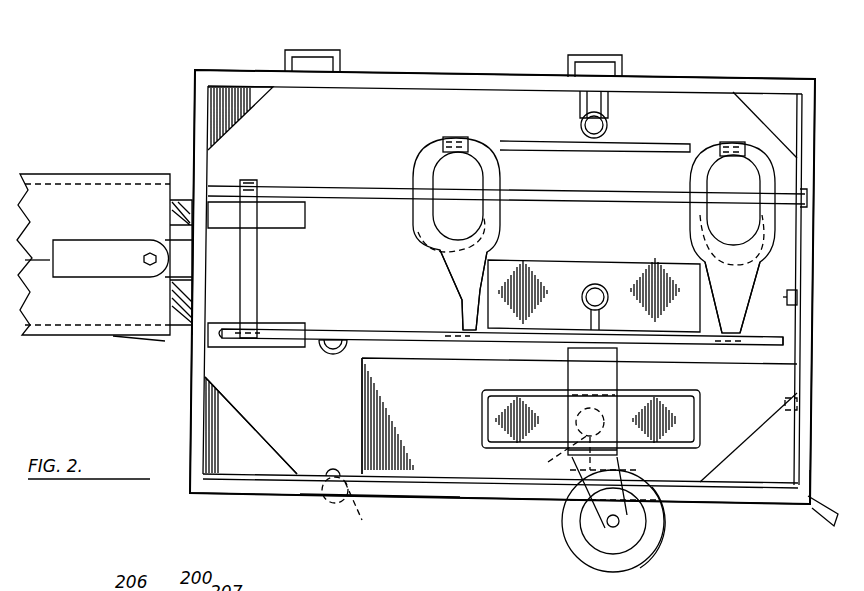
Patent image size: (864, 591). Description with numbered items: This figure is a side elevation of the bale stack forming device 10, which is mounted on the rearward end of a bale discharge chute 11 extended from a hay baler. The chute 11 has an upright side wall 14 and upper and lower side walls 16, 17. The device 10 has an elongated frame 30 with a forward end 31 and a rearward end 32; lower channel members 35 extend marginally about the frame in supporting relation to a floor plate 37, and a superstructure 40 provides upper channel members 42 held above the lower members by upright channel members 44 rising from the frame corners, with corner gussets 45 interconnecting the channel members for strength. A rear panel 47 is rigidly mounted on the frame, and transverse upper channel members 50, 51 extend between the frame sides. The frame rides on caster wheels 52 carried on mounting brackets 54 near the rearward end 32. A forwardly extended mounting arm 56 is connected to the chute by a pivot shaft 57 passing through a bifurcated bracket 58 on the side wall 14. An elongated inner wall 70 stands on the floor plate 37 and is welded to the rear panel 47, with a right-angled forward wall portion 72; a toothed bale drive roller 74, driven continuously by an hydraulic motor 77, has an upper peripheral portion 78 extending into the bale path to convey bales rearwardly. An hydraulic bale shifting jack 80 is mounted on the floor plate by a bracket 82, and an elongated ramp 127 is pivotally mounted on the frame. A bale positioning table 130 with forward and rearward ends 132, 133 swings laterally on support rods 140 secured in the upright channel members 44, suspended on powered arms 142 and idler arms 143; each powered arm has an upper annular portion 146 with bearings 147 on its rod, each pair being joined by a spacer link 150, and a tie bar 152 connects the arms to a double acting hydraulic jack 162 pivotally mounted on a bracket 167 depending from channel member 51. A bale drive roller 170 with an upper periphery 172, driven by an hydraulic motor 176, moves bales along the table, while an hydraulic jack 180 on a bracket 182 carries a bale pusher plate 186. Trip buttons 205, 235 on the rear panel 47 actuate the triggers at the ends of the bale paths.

The bale stack forming device 10 is at (212, 58).
The bale discharge chute 11 is at (73, 172).
The side wall 14 is at (71, 223).
The upper side wall 16 is at (125, 183).
The lower side wall 17 is at (112, 340).
The frame 30 is at (448, 68).
The forward end 31 is at (196, 412).
The rearward end 32 is at (815, 328).
The channel members 35 is at (386, 498).
The floor plate 37 is at (268, 472).
The superstructure 40 is at (738, 78).
The upper channel members 42 is at (450, 82).
The upright channel members 44 is at (198, 124).
The corner gussets 45 is at (228, 110).
The rear panel 47 is at (815, 292).
The upper channel member 50 is at (330, 50).
The upper channel member 51 is at (620, 56).
The caster wheels 52 is at (665, 540).
The mounting brackets 54 is at (615, 376).
The mounting arm 56 is at (210, 262).
The pivot shaft 57 is at (152, 268).
The bifurcated bracket 58 is at (100, 250).
The inner wall 70 is at (451, 395).
The forward wall portion 72 is at (362, 412).
The bale drive roller 74 is at (330, 500).
The hydraulic motor 77 is at (355, 511).
The upper peripheral portion 78 is at (333, 472).
The hydraulic bale shifting jack 80 is at (615, 433).
The bracket 82 is at (553, 455).
The ramp 127 is at (832, 525).
The bale positioning table 130 is at (366, 328).
The forward end 132 is at (214, 336).
The rearward end 133 is at (783, 344).
The support rods 140 is at (385, 187).
The powered arms 142 is at (447, 265).
The idler arms 143 is at (258, 276).
The upper annular portion 146 is at (500, 172).
The bearings 147 is at (418, 225).
The spacer link 150 is at (456, 137).
The tie bar 152 is at (636, 147).
The double acting hydraulic jack 162 is at (580, 128).
The bracket 167 is at (578, 105).
The bale drive roller 170 is at (326, 352).
The upper periphery 172 is at (345, 330).
The hydraulic motor 176 is at (350, 344).
The hydraulic jack 180 is at (598, 282).
The bracket 182 is at (590, 302).
The bale pusher plate 186 is at (518, 262).
The trip button 205 is at (786, 297).
The trip button 235 is at (785, 405).